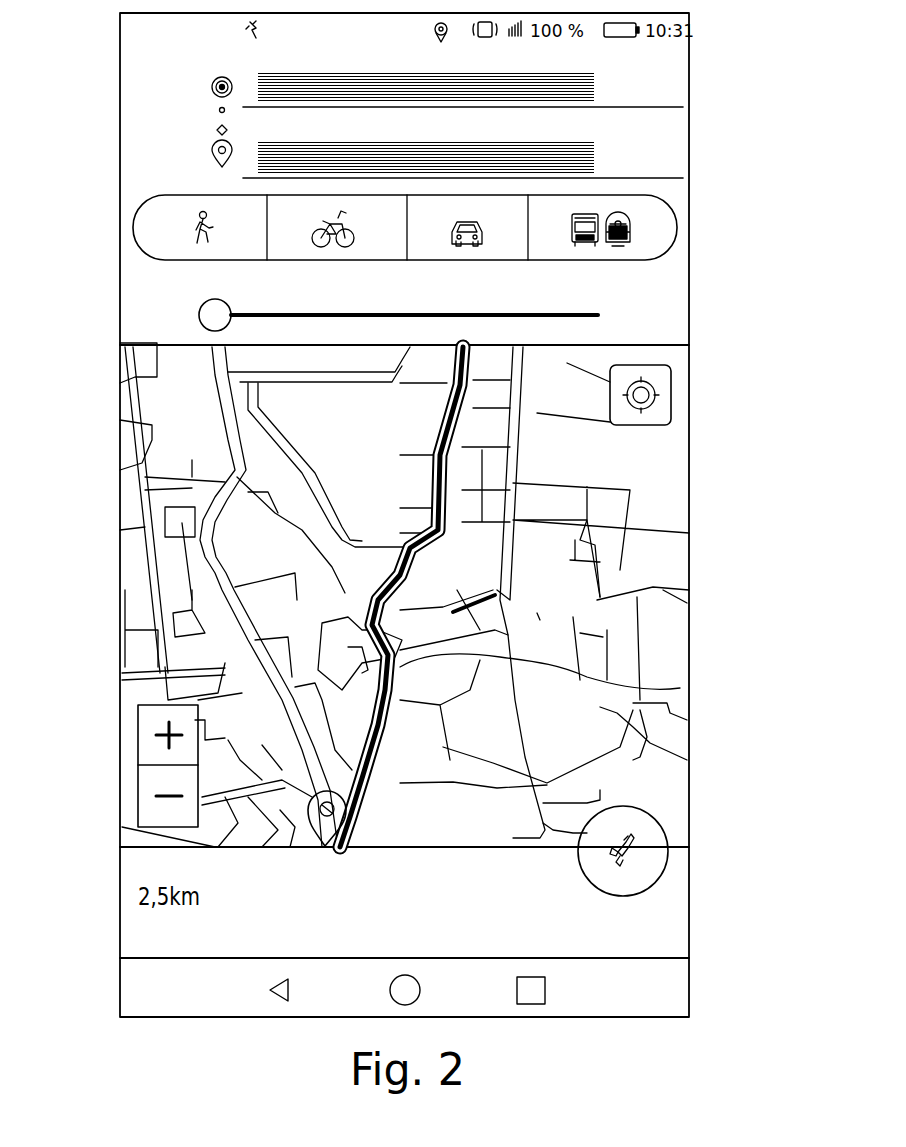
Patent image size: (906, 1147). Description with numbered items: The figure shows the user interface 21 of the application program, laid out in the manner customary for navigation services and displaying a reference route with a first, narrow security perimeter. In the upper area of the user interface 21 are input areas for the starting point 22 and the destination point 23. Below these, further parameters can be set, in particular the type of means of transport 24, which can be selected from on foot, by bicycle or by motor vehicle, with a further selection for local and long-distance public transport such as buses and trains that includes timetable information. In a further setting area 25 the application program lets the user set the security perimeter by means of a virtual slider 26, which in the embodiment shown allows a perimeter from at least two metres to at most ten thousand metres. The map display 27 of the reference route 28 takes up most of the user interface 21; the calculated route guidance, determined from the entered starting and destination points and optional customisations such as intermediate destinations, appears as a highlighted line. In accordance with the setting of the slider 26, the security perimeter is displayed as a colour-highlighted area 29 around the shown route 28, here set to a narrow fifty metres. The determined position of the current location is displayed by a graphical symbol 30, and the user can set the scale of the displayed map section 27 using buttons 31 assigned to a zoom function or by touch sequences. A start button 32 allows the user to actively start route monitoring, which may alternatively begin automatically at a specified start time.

The user interface 21 is at (706, 380).
The starting point input area 22 is at (667, 78).
The destination point input area 23 is at (667, 138).
The type of means of transport 24 is at (663, 230).
The setting area 25 is at (137, 272).
The virtual slider 26 is at (177, 307).
The map display 27 is at (163, 555).
The reference route 28 is at (443, 493).
The security perimeter 29 is at (660, 694).
The graphical symbol 30 is at (350, 847).
The zoom buttons 31 is at (163, 753).
The start button 32 is at (655, 865).